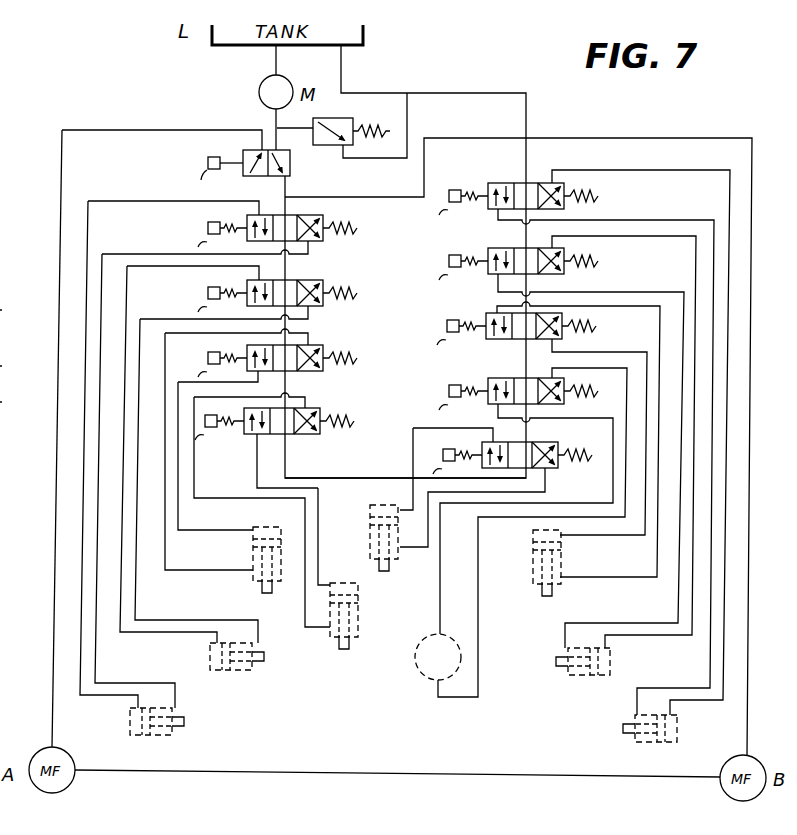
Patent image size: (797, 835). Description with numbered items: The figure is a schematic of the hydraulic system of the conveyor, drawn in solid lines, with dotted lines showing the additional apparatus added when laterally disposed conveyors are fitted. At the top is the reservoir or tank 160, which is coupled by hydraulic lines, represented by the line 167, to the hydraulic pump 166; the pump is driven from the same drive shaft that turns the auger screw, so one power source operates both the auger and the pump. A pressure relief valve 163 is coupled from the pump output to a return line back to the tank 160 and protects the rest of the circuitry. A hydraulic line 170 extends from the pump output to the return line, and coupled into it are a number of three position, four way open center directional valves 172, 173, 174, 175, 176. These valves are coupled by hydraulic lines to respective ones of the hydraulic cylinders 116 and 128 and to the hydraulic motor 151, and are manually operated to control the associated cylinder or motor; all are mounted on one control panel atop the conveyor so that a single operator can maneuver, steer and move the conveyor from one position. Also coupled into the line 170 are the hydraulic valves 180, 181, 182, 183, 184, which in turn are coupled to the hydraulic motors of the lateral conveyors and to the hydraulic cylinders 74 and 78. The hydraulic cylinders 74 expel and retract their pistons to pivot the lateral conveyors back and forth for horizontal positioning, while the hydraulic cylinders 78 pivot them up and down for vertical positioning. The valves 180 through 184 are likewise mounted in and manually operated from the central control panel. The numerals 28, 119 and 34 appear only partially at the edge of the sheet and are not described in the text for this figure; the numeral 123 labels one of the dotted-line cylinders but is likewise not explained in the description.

The tank 160 is at (366, 44).
The hydraulic line 167 is at (274, 57).
The hydraulic pump 166 is at (258, 92).
The hydraulic valve 180 is at (247, 152).
The pressure relief valve 163 is at (326, 146).
The hydraulic valve 181 is at (322, 243).
The hydraulic valve 182 is at (322, 308).
The directional valve 172 is at (318, 373).
The directional valve 173 is at (316, 436).
The hydraulic line 170 is at (382, 478).
The hydraulic valve 184 is at (500, 181).
The hydraulic valve 183 is at (496, 246).
The directional valve 176 is at (488, 311).
The directional valve 175 is at (490, 376).
The directional valve 174 is at (490, 440).
The hydraulic cylinder 128 is at (256, 580).
The hydraulic cylinder 116 is at (372, 560).
The hydraulic cylinder 123 is at (556, 590).
The hydraulic motor 151 is at (440, 678).
The hydraulic cylinder 78 is at (268, 666).
The hydraulic cylinder 74 is at (190, 724).
The frame member 28 is at (10, 321).
The arm 119 is at (15, 377).
The support 34 is at (10, 413).